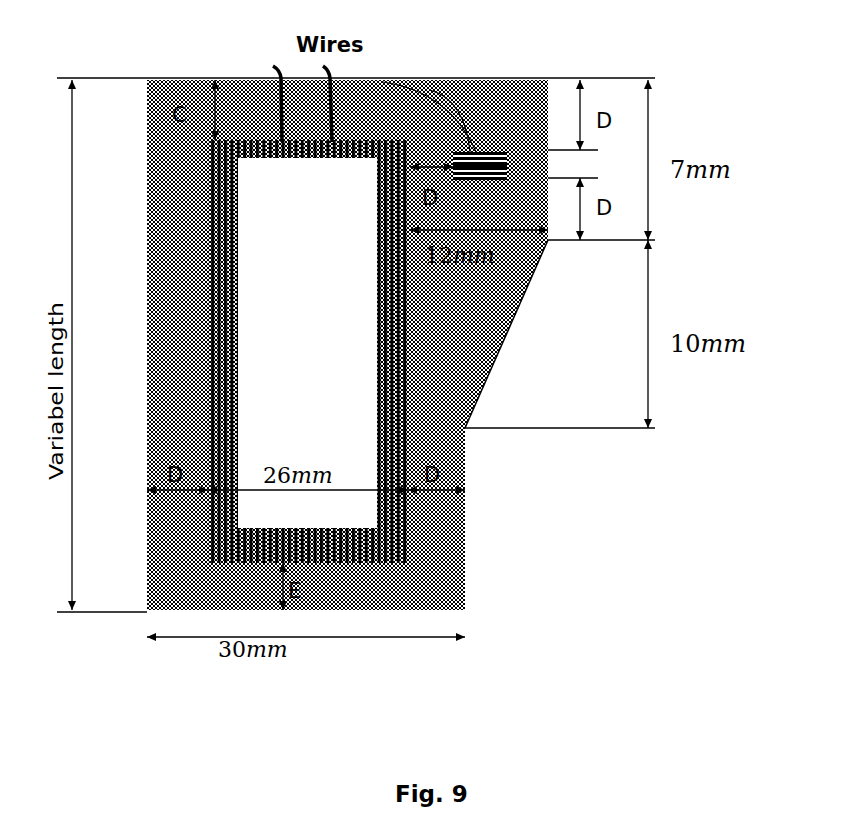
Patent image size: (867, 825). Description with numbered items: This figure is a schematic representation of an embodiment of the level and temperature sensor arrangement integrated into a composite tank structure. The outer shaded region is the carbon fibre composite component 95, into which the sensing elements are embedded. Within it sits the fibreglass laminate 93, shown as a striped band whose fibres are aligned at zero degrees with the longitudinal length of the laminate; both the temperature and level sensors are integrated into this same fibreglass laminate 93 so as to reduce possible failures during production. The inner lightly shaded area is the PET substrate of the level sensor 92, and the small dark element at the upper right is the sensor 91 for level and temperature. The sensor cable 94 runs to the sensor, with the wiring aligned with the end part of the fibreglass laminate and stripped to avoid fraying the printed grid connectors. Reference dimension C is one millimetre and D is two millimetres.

The sensor 91 is at (589, 320).
The PET substrate of the level sensor 92 is at (481, 345).
The fibreglass laminate 93 is at (466, 357).
The sensor cable 94 is at (625, 587).
The carbon fibre composite component 95 is at (436, 371).